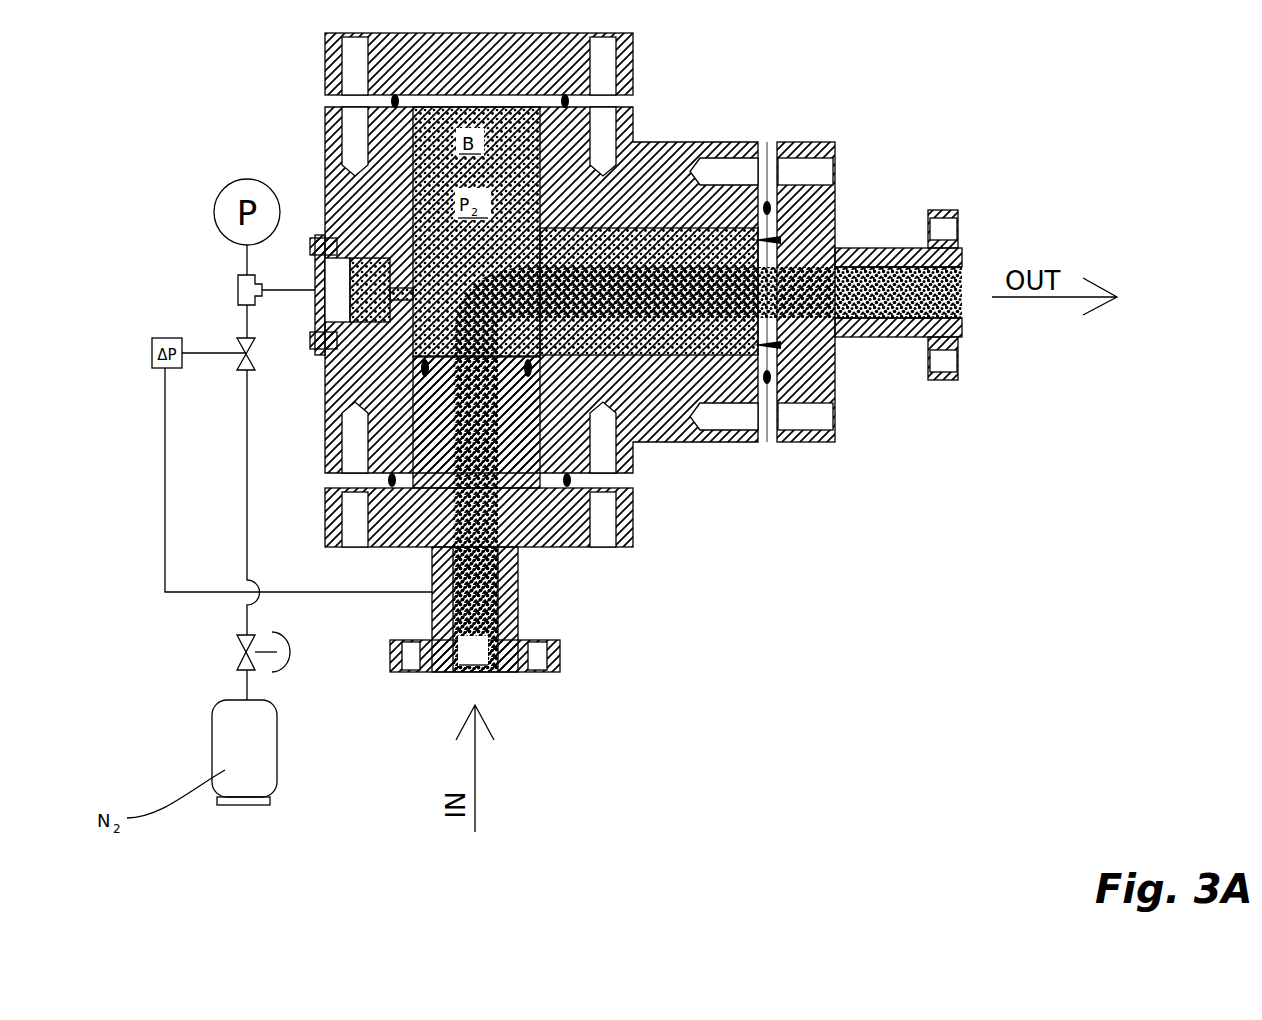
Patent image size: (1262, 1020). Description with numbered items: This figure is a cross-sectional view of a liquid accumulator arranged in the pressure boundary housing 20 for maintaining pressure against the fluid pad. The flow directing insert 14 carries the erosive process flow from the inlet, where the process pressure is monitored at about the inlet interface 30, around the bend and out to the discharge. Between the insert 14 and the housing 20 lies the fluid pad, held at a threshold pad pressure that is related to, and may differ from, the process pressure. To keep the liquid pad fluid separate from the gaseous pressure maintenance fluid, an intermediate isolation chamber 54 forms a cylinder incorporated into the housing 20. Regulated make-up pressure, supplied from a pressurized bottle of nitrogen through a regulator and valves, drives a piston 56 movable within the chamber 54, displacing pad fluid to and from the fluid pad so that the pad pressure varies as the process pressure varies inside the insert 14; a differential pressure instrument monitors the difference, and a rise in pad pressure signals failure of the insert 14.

The flow directing insert 14 is at (650, 197).
The pressure boundary housing 20 is at (683, 445).
The inlet interface 30 is at (437, 673).
The intermediate isolation chamber 54 is at (328, 235).
The piston 56 is at (327, 310).